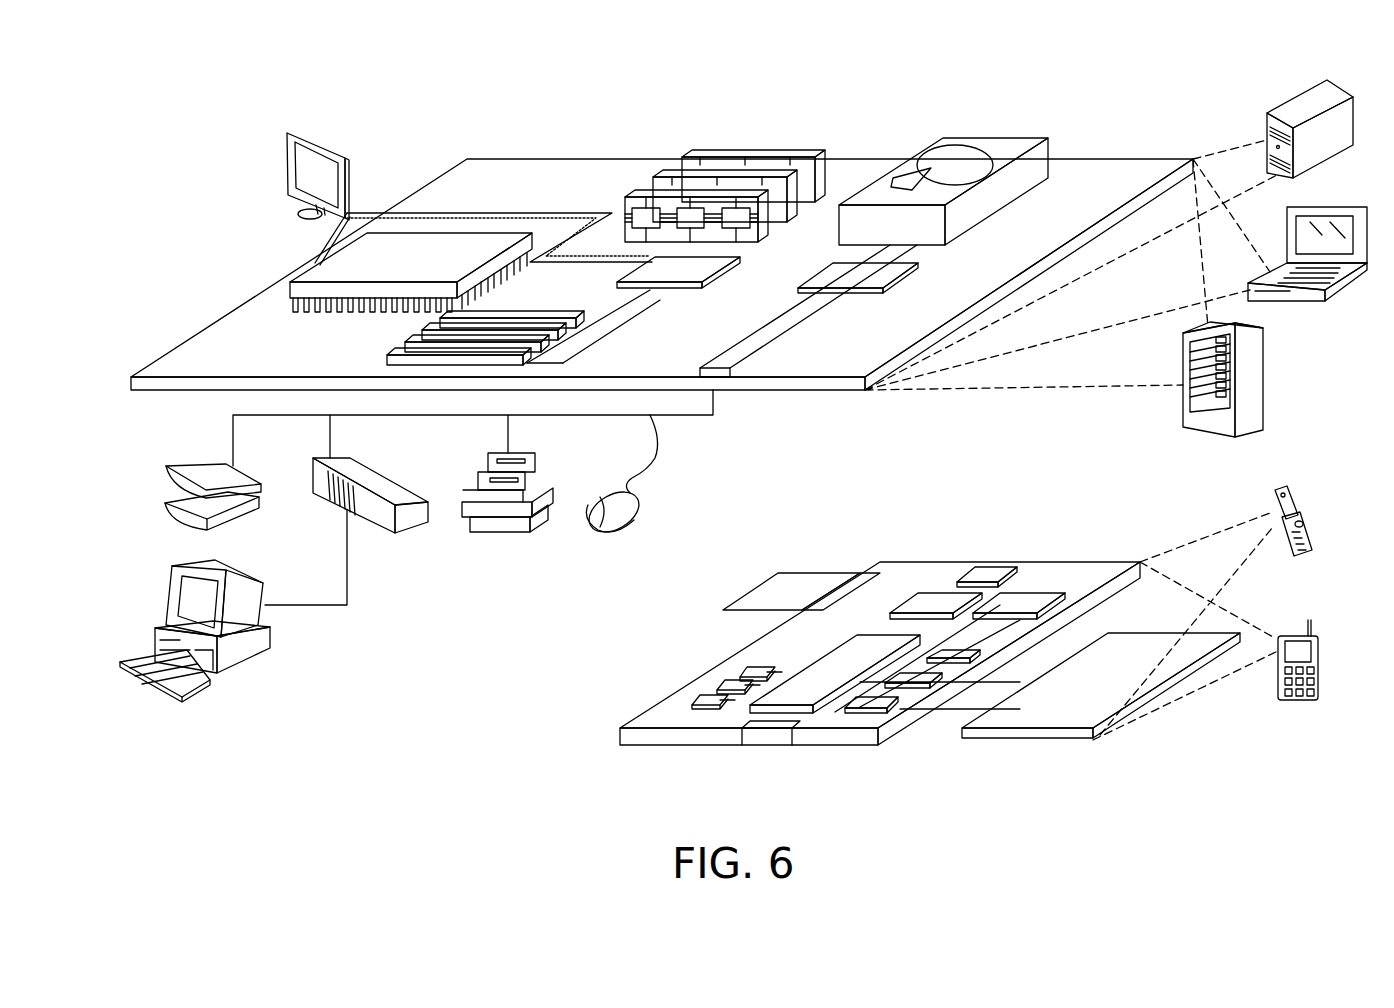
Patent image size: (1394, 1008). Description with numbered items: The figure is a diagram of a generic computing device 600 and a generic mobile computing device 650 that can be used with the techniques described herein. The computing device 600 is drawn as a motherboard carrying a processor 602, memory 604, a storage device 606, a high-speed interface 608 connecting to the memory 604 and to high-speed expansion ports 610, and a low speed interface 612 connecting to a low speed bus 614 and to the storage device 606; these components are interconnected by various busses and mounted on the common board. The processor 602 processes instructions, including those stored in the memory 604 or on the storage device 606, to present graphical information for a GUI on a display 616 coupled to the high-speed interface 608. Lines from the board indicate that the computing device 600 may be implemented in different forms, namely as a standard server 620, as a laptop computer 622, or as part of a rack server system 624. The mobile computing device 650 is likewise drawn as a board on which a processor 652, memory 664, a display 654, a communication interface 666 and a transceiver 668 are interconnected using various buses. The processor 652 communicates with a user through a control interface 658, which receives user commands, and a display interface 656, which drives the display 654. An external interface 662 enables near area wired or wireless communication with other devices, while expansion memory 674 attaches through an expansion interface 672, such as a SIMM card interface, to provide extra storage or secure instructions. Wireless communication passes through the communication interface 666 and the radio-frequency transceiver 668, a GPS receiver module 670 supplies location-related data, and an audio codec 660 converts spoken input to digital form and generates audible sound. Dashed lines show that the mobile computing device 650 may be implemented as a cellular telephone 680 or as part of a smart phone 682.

The computing device 600 is at (420, 106).
The processor 602 is at (316, 262).
The memory 604 is at (758, 155).
The storage device 606 is at (985, 136).
The high-speed interface 608 is at (690, 268).
The high-speed expansion ports 610 is at (415, 338).
The low speed interface 612 is at (833, 272).
The low speed bus 614 is at (720, 360).
The display 616 is at (290, 128).
The standard server 620 is at (1287, 108).
The laptop computer 622 is at (1338, 206).
The rack server system 624 is at (1265, 380).
The mobile computing device 650 is at (570, 757).
The processor 652 is at (806, 678).
The display 654 is at (1140, 647).
The display interface 656 is at (880, 702).
The control interface 658 is at (920, 677).
The audio codec 660 is at (955, 650).
The external interface 662 is at (766, 730).
The memory 664 is at (720, 682).
The communication interface 666 is at (935, 602).
The transceiver 668 is at (1023, 600).
The GPS receiver module 670 is at (985, 567).
The expansion interface 672 is at (861, 572).
The expansion memory 674 is at (778, 572).
The cellular telephone 680 is at (1278, 486).
The smart phone 682 is at (1295, 633).